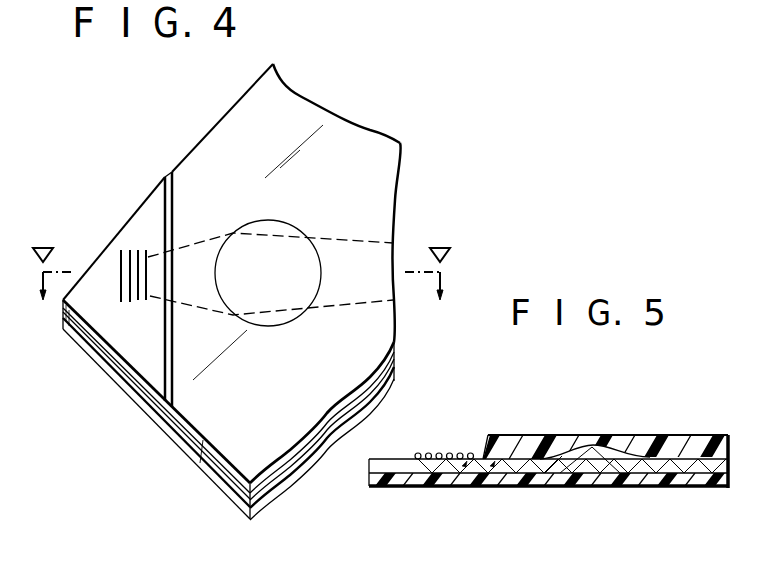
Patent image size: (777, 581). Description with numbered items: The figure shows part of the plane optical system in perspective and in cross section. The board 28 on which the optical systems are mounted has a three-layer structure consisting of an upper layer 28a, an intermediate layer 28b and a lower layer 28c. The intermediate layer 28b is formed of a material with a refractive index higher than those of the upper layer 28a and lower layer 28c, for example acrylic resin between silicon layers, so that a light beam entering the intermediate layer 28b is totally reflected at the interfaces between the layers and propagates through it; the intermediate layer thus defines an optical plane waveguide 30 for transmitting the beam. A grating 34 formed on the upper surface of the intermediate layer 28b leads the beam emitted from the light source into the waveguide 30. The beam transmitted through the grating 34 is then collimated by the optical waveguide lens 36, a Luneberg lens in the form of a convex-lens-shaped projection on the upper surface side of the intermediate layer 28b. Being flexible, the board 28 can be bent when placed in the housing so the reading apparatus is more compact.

In FIG. 4, the board 28 is at (232, 292).
In FIG. 5, the board 28 is at (548, 461).
In FIG. 5, the upper layer 28a is at (601, 430).
In FIG. 4, the intermediate layer 28b is at (167, 413).
In FIG. 5, the intermediate layer 28b is at (683, 470).
In FIG. 4, the lower layer 28c is at (193, 452).
In FIG. 5, the lower layer 28c is at (581, 488).
In FIG. 5, the optical plane waveguide 30 is at (455, 494).
In FIG. 4, the grating 34 is at (128, 258).
In FIG. 5, the grating 34 is at (418, 452).
In FIG. 4, the optical waveguide lens 36 is at (277, 323).
In FIG. 5, the optical waveguide lens 36 is at (597, 445).